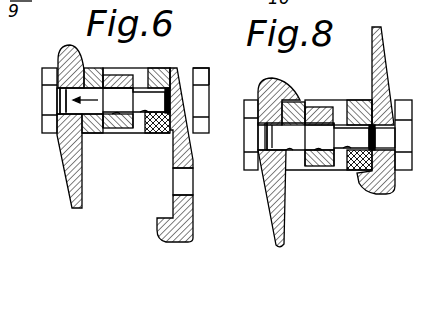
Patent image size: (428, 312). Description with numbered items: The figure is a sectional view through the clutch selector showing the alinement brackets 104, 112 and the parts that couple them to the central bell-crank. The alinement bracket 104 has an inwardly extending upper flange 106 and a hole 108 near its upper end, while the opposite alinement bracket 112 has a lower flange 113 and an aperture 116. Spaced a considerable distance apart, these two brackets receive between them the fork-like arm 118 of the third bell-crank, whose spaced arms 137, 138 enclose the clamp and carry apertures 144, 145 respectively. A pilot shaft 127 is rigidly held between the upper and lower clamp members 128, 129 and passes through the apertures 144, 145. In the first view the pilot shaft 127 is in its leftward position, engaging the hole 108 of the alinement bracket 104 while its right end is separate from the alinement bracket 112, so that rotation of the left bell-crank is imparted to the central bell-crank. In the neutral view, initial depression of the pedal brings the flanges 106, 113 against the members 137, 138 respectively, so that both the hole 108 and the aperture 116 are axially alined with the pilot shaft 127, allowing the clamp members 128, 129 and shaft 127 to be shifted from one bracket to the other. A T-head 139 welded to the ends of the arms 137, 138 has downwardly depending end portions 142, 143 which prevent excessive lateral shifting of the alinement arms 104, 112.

In FIG. 6, the alinement bracket 104 is at (62, 161).
In FIG. 8, the alinement bracket 104 is at (268, 205).
In FIG. 6, the upper flange 106 is at (98, 66).
In FIG. 8, the upper flange 106 is at (302, 101).
In FIG. 6, the hole 108 is at (62, 97).
In FIG. 8, the hole 108 is at (265, 130).
In FIG. 6, the alinement bracket 112 is at (173, 157).
In FIG. 8, the alinement bracket 112 is at (373, 54).
In FIG. 6, the lower flange 113 is at (160, 229).
In FIG. 8, the lower flange 113 is at (364, 189).
In FIG. 6, the aperture 116 is at (182, 182).
In FIG. 8, the arm 118 is at (383, 138).
In FIG. 6, the pilot shaft 127 is at (73, 106).
In FIG. 8, the pilot shaft 127 is at (277, 141).
In FIG. 6, the upper member 128 is at (118, 77).
In FIG. 8, the upper member 128 is at (316, 110).
In FIG. 6, the lower member 129 is at (117, 134).
In FIG. 8, the lower member 129 is at (318, 168).
In FIG. 6, the arm 137 is at (97, 72).
In FIG. 8, the arm 137 is at (302, 100).
In FIG. 6, the arm 138 is at (163, 134).
In FIG. 8, the arm 138 is at (354, 101).
In FIG. 6, the T-head 139 is at (182, 70).
In FIG. 6, the end portion 142 is at (44, 70).
In FIG. 8, the end portion 142 is at (246, 105).
In FIG. 6, the end portion 143 is at (201, 78).
In FIG. 8, the end portion 143 is at (405, 107).
In FIG. 6, the aperture 144 is at (87, 131).
In FIG. 8, the aperture 144 is at (287, 152).
In FIG. 6, the aperture 145 is at (147, 134).
In FIG. 8, the aperture 145 is at (346, 172).